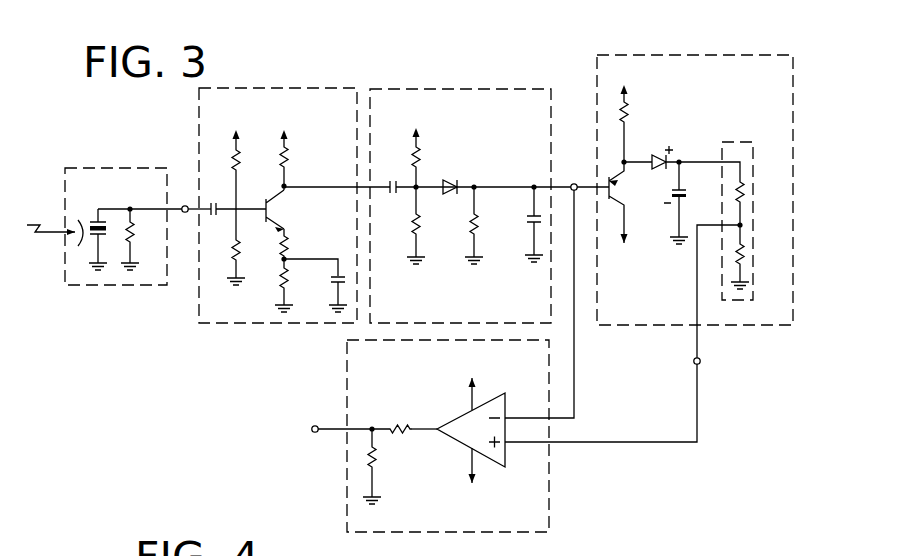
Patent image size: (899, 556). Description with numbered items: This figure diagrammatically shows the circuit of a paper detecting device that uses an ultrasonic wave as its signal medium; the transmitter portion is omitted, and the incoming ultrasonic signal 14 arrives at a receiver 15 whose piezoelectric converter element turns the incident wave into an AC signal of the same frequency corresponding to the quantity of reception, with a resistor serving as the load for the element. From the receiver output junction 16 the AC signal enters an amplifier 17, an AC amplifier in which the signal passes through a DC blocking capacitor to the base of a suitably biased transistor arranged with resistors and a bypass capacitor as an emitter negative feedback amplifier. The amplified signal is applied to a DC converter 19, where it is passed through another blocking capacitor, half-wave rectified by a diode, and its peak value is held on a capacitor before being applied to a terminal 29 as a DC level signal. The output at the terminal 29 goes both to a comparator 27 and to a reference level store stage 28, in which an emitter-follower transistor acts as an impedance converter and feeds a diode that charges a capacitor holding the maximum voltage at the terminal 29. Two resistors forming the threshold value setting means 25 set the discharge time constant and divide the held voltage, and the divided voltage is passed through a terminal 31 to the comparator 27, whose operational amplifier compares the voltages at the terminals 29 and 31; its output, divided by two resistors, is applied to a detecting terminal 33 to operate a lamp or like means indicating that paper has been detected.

The sound wave input 14 is at (55, 224).
The receiver 15 is at (125, 214).
The input junction 16 is at (194, 200).
The amplifier 17 is at (278, 192).
The DC converter 19 is at (460, 192).
The threshold value setting means 25 is at (755, 209).
The comparator 27 is at (448, 448).
The reference level stage 28 is at (695, 194).
The terminal 29 is at (557, 287).
The terminal 31 is at (619, 396).
The detecting terminal 33 is at (345, 415).